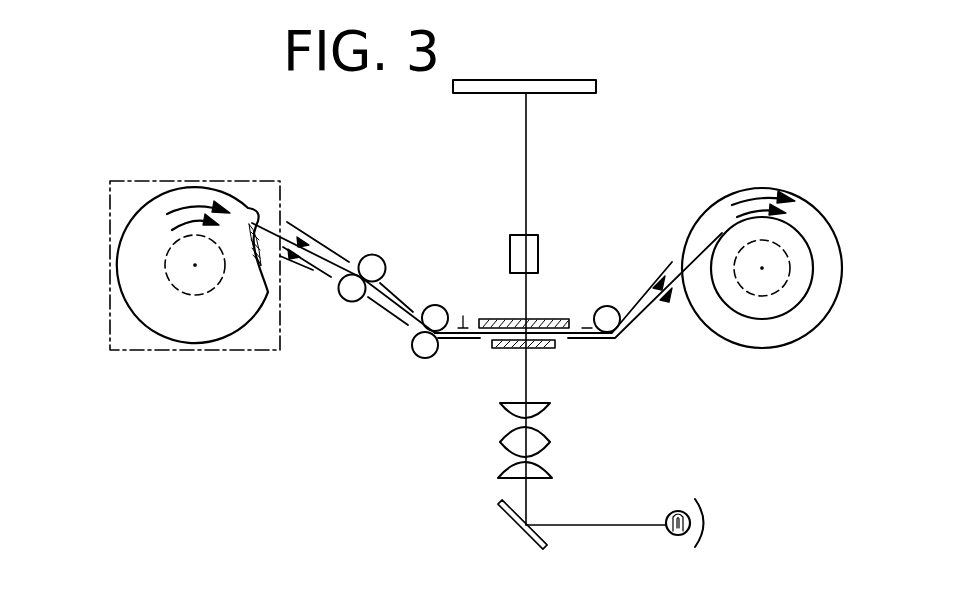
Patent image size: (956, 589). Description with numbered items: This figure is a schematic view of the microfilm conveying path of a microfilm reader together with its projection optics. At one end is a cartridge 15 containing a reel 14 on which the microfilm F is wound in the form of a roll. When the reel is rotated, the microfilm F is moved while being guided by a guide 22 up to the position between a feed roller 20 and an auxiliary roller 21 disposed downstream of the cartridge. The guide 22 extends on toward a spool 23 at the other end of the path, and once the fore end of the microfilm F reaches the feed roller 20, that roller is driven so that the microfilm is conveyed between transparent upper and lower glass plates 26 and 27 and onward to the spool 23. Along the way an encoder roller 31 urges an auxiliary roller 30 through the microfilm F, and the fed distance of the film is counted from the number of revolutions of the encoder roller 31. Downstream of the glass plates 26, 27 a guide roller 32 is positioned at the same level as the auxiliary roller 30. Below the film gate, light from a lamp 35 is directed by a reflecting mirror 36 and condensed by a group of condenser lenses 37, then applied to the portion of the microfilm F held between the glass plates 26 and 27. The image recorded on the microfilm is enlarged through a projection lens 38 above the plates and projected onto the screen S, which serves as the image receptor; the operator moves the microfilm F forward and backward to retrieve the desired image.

The screen S is at (548, 80).
The microfilm F is at (283, 218).
The reel 14 is at (268, 318).
The cartridge 15 is at (197, 352).
The feed roller 20 is at (352, 302).
The auxiliary roller 21 is at (386, 256).
The guide 22 is at (312, 238).
The spool 23 is at (764, 320).
The upper glass plate 26 is at (542, 318).
The lower glass plate 27 is at (536, 349).
The auxiliary roller 30 is at (435, 305).
The encoder roller 31 is at (425, 358).
The guide roller 32 is at (601, 307).
The lamp 35 is at (676, 510).
The reflecting mirror 36 is at (504, 522).
The condenser lenses 37 is at (490, 443).
The projection lens 38 is at (538, 255).